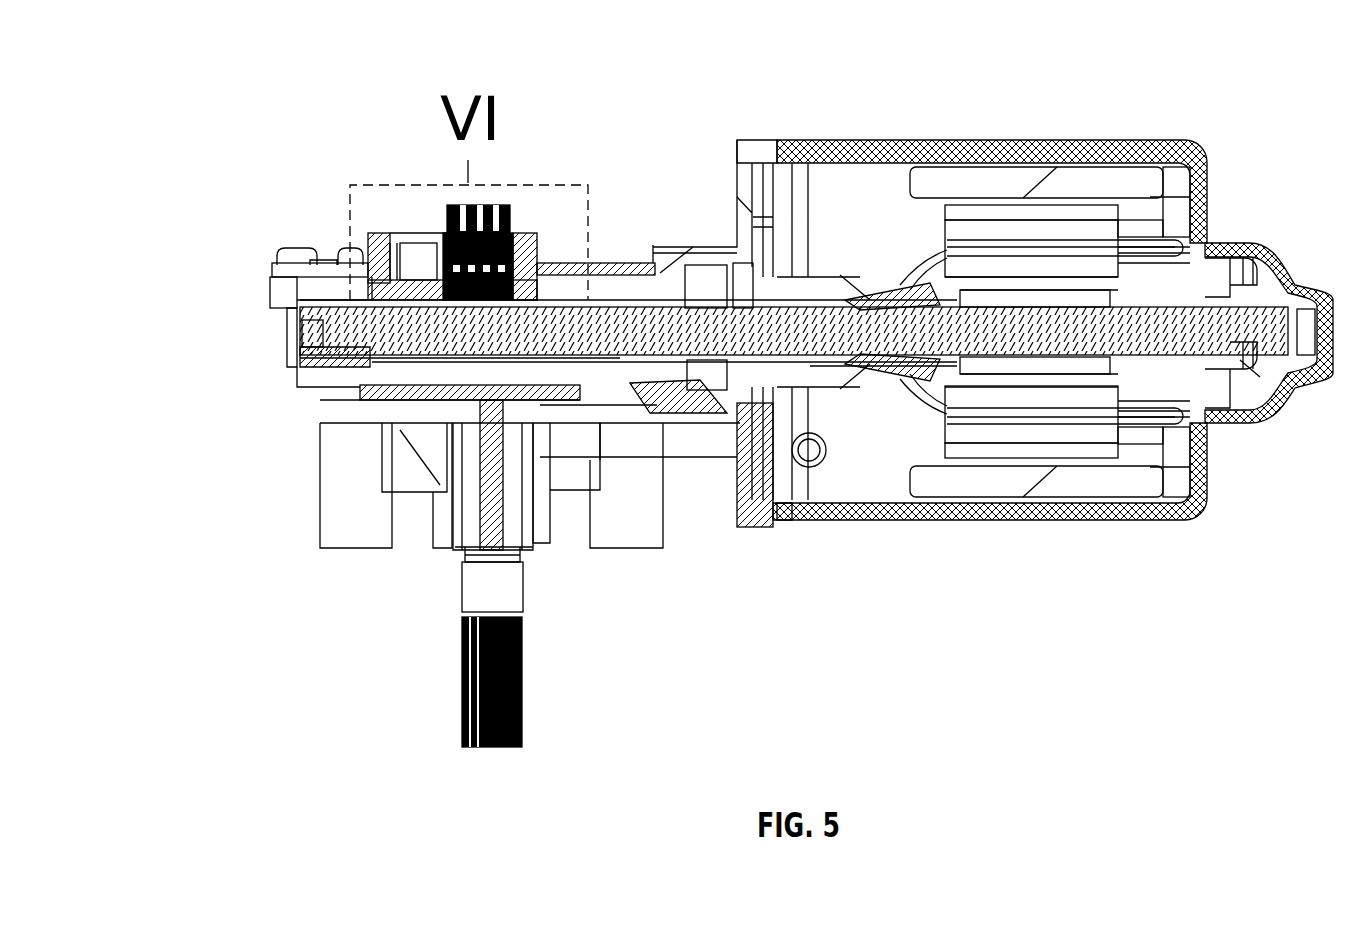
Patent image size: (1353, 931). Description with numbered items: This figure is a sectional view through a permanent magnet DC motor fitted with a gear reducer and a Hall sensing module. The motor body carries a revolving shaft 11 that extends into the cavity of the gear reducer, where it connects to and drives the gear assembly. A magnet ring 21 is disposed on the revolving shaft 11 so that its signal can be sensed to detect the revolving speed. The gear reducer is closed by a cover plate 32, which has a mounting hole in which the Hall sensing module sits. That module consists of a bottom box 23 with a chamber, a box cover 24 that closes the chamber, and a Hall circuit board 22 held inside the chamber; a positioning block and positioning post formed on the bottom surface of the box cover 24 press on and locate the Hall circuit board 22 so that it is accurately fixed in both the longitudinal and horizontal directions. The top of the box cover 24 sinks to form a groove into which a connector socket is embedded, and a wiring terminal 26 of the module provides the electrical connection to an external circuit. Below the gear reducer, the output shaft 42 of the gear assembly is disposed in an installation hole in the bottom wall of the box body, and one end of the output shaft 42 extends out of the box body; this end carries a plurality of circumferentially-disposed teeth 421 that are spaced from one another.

The revolving shaft 11 is at (347, 408).
The magnet ring 21 is at (293, 372).
The Hall circuit board 22 is at (363, 273).
The bottom box 23 is at (537, 240).
The box cover 24 is at (413, 233).
The wiring terminal 26 is at (452, 207).
The cover plate 32 is at (607, 268).
The output shaft 42 is at (513, 580).
The teeth 421 is at (513, 660).